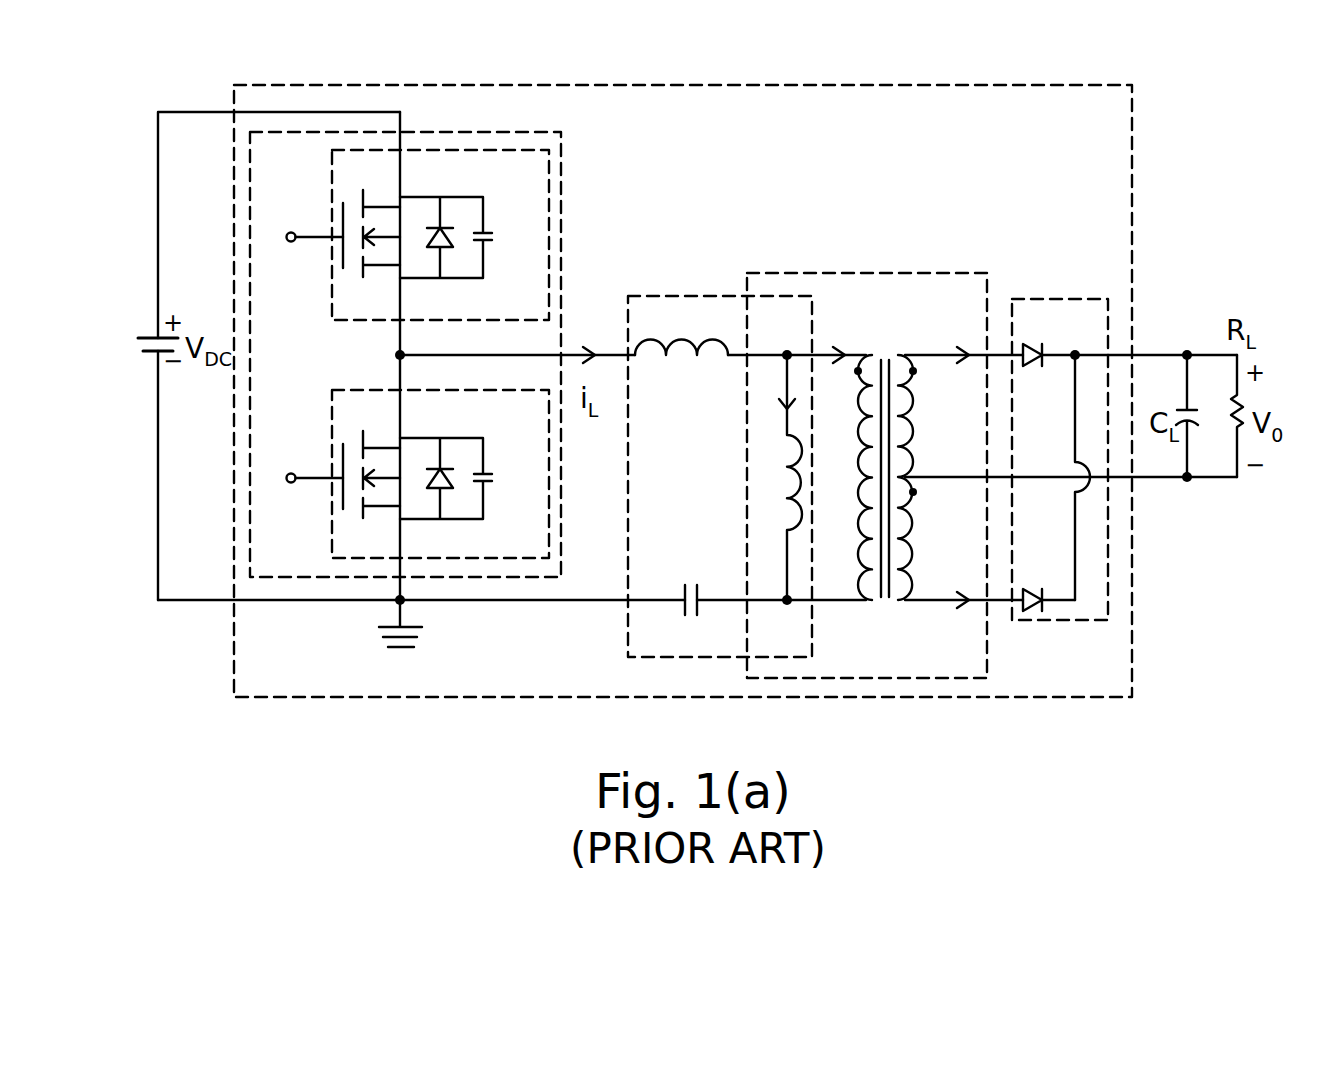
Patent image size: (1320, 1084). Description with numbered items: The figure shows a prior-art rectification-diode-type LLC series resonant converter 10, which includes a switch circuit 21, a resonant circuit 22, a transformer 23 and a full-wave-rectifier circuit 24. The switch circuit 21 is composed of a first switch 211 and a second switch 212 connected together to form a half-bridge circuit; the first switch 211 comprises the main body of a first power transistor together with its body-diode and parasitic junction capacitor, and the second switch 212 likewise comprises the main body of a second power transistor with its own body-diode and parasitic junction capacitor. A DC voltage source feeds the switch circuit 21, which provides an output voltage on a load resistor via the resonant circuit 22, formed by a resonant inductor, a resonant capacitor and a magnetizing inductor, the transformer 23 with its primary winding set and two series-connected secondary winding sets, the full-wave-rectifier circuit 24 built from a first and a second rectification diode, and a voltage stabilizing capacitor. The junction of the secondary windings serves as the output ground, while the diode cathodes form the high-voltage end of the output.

The LLC series resonant converter 10 is at (718, 85).
The switch circuit 21 is at (528, 132).
The first switch 211 is at (418, 148).
The second switch 212 is at (332, 412).
The resonant circuit 22 is at (657, 296).
The transformer 23 is at (813, 273).
The full-wave-rectifier circuit 24 is at (1038, 299).